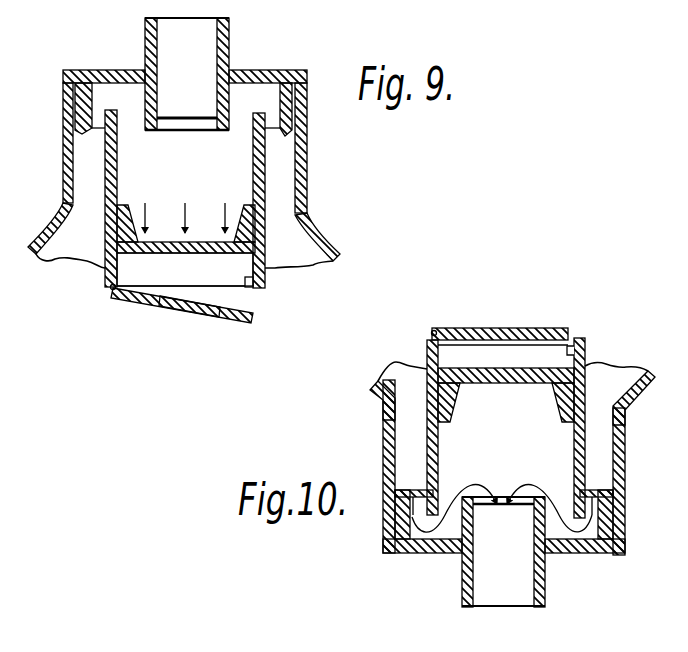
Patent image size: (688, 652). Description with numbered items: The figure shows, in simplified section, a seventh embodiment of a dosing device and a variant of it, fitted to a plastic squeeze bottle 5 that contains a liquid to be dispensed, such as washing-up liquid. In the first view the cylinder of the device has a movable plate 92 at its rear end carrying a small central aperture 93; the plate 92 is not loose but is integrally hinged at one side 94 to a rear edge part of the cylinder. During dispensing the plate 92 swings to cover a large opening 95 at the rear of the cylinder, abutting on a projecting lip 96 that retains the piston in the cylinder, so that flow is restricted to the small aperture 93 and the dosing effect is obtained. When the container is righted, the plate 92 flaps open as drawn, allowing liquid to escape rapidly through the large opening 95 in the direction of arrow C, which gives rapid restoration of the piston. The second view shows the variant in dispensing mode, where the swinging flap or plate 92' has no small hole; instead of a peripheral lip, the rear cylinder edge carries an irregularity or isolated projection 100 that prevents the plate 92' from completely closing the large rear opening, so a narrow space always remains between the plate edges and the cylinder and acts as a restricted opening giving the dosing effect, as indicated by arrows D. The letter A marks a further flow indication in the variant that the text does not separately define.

In FIG. 9, the plastic squeeze bottle 5 is at (332, 246).
In FIG. 9, the movable plate 92 is at (177, 320).
In FIG. 9, the small central aperture 93 is at (185, 306).
In FIG. 9, the hinged side 94 is at (111, 290).
In FIG. 9, the large opening 95 is at (220, 288).
In FIG. 9, the projecting lip 96 is at (256, 288).
In FIG. 9, the arrow C is at (225, 270).
In FIG. 10, the swinging flap or plate 92' is at (500, 303).
In FIG. 10, the isolated projection 100 is at (575, 349).
In FIG. 10, the arrows D is at (470, 362).
In FIG. 10, the air flow A is at (502, 498).